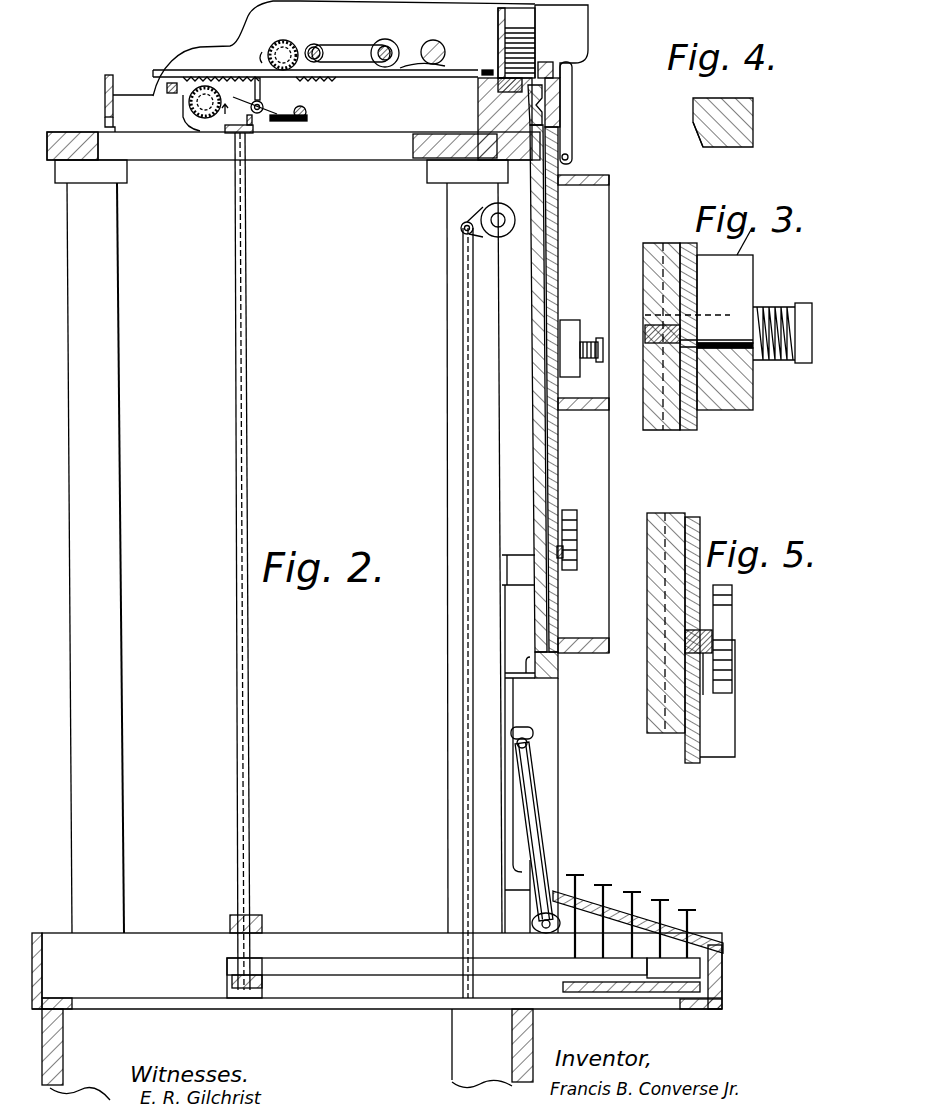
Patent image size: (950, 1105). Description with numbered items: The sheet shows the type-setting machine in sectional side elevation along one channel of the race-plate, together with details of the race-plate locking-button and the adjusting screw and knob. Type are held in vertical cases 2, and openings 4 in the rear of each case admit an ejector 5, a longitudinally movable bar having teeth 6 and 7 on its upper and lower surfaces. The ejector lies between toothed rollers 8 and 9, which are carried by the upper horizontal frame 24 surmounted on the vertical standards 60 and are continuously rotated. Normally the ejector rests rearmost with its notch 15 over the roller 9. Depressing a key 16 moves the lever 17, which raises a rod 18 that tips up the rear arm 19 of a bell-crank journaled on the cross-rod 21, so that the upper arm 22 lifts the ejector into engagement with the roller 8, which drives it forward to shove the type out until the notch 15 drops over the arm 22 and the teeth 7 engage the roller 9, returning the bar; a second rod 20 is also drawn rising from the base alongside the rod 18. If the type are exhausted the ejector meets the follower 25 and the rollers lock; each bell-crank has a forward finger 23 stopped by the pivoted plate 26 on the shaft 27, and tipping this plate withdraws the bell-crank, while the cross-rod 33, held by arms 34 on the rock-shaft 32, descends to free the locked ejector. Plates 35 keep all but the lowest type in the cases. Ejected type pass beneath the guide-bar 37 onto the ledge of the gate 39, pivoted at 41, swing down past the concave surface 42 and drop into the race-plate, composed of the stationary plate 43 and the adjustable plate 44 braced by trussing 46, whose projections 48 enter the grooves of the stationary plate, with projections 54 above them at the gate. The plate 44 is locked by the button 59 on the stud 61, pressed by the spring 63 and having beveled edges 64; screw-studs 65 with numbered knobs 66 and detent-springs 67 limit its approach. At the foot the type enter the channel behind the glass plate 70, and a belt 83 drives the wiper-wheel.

In FIG. 2, the type-case 2 is at (498, 21).
In FIG. 2, the opening 4 is at (493, 70).
In FIG. 2, the ejector 5 is at (450, 72).
In FIG. 2, the upper teeth 6 is at (334, 79).
In FIG. 2, the lower teeth 7 is at (315, 65).
In FIG. 2, the upper toothed roller 8 is at (285, 40).
In FIG. 2, the lower toothed roller 9 is at (189, 107).
In FIG. 2, the notch 15 is at (238, 70).
In FIG. 2, the key 16 is at (689, 910).
In FIG. 2, the lever 17 is at (381, 968).
In FIG. 2, the rod 18 is at (236, 426).
In FIG. 2, the rear arm of bell-crank lever 19 is at (233, 112).
In FIG. 2, the rod 20 is at (463, 412).
In FIG. 2, the cross-rod 21 is at (263, 107).
In FIG. 2, the upper arm of bell-crank lever 22 is at (260, 96).
In FIG. 2, the forward finger 23 is at (259, 120).
In FIG. 2, the upper horizontal frame 24 is at (293, 146).
In FIG. 2, the follower 25 is at (535, 18).
In FIG. 2, the pivoted plate 26 is at (290, 123).
In FIG. 2, the shaft 27 is at (307, 113).
In FIG. 2, the rock-shaft 32 is at (385, 40).
In FIG. 2, the cross-rod 33 is at (319, 45).
In FIG. 2, the arms 34 is at (351, 53).
In FIG. 2, the plate 35 is at (536, 33).
In FIG. 2, the guide-bar 37 is at (553, 58).
In FIG. 2, the gate 39 is at (562, 88).
In FIG. 2, the pivot 41 is at (572, 146).
In FIG. 2, the concave surface 42 is at (542, 105).
In FIG. 2, the stationary plate 43 is at (534, 442).
In FIG. 3, the stationary plate 43 is at (658, 328).
In FIG. 5, the stationary plate 43 is at (666, 613).
In FIG. 2, the adjustable plate 44 is at (558, 450).
In FIG. 3, the adjustable plate 44 is at (678, 328).
In FIG. 5, the adjustable plate 44 is at (694, 520).
In FIG. 2, the trussing 46 is at (583, 414).
In FIG. 2, the projections 48 is at (583, 419).
In FIG. 2, the projections 54 is at (581, 348).
In FIG. 4, the button 59 is at (753, 118).
In FIG. 3, the button 59 is at (699, 332).
In FIG. 2, the vertical standards 60 is at (447, 330).
In FIG. 3, the stud 61 is at (699, 335).
In FIG. 3, the spring 63 is at (780, 310).
In FIG. 4, the beveled edges 64 is at (700, 136).
In FIG. 5, the screw-stud 65 is at (712, 633).
In FIG. 2, the knob 66 is at (578, 546).
In FIG. 5, the knob 66 is at (730, 612).
In FIG. 5, the detent-spring 67 is at (735, 706).
In FIG. 2, the glass plate 70 is at (558, 739).
In FIG. 2, the belt 83 is at (523, 773).